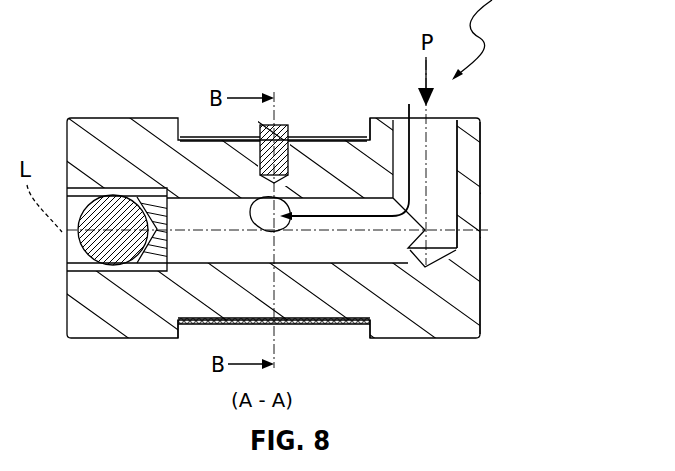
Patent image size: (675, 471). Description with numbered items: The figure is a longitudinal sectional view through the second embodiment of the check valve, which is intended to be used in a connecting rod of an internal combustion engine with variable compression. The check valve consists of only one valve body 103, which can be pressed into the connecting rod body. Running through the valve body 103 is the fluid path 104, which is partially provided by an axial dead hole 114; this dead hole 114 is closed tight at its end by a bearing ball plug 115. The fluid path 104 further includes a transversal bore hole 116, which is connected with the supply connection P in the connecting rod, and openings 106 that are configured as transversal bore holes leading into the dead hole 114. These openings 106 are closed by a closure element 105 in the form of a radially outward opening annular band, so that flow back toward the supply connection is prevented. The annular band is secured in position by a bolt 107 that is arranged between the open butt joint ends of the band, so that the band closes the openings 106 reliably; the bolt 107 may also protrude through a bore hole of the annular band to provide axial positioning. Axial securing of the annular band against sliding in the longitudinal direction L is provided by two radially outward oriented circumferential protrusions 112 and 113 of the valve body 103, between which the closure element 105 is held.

The valve body 103 is at (130, 112).
The fluid path 104 is at (409, 116).
The closure element 105 is at (338, 326).
The openings 106 is at (250, 211).
The bolt 107 is at (280, 122).
The circumferential protrusion 112 is at (187, 132).
The circumferential protrusion 113 is at (362, 126).
The axial dead hole 114 is at (304, 258).
The bearing ball plug 115 is at (107, 266).
The transversal bore hole 116 is at (438, 148).